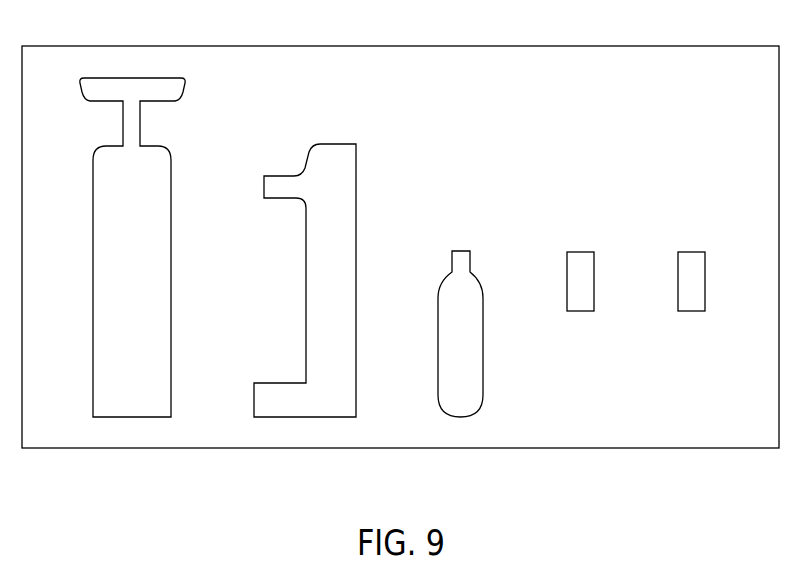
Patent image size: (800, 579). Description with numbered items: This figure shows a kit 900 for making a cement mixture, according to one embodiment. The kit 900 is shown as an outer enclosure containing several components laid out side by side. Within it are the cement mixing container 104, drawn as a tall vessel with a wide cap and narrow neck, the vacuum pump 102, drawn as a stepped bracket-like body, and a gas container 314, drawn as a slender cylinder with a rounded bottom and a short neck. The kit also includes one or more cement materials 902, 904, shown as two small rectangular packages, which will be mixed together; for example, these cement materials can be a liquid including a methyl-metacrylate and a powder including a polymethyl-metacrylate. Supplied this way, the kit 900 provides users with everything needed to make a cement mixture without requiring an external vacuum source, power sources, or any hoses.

The kit 900 is at (400, 46).
The cement mixing container 104 is at (171, 290).
The vacuum pump 102 is at (340, 144).
The gas container 314 is at (483, 345).
The cement material 902 is at (582, 252).
The cement material 904 is at (693, 252).